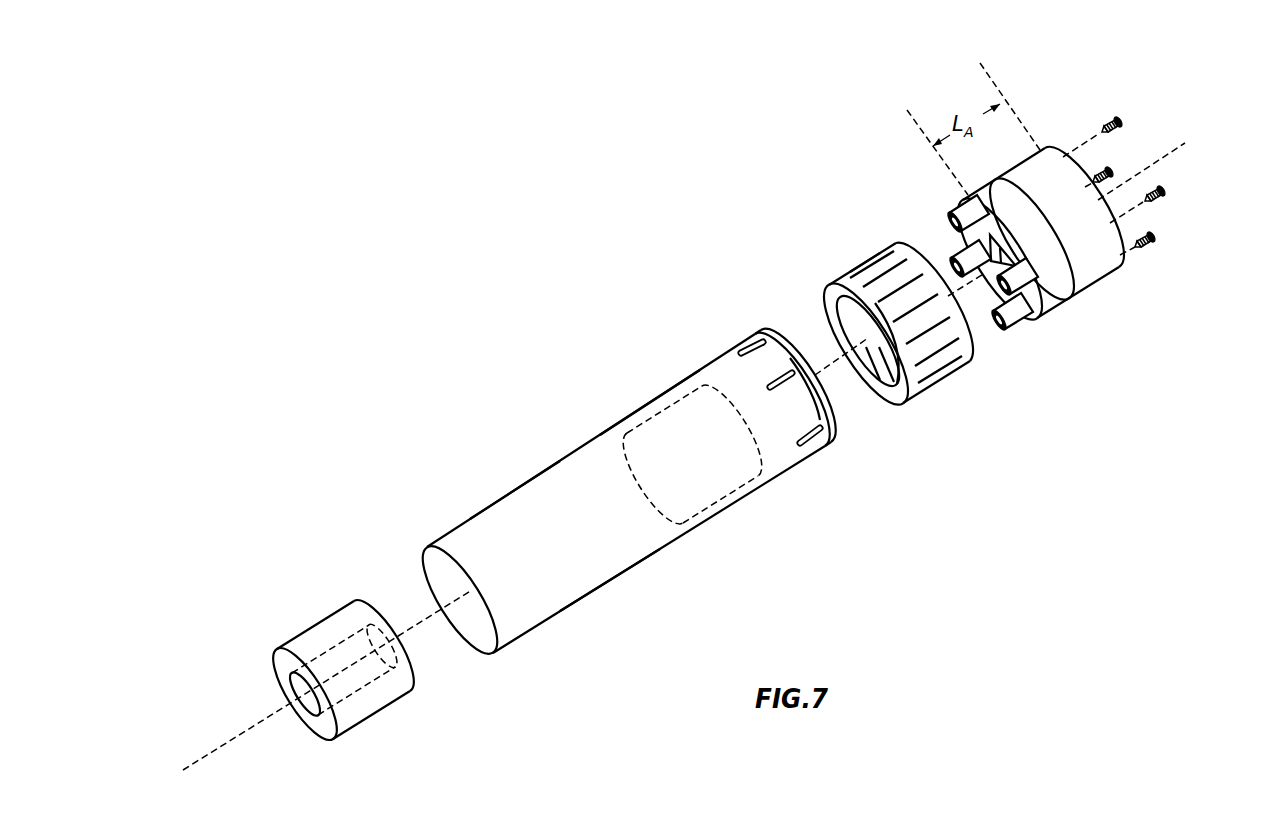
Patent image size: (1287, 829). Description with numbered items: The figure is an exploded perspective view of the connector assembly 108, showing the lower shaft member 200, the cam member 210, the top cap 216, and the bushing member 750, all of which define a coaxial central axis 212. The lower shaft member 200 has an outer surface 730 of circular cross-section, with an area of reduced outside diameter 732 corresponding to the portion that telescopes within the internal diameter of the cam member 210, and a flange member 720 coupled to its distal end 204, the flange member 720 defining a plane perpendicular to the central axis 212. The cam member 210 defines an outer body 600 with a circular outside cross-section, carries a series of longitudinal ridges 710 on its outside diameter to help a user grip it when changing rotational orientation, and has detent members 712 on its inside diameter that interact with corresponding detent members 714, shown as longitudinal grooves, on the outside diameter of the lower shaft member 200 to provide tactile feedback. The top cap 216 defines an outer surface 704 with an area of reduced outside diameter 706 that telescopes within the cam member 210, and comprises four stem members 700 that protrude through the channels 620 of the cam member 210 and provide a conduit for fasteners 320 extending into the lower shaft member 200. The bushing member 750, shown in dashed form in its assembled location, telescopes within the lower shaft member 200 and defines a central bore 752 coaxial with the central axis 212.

The connector assembly 108 is at (610, 330).
The lower shaft member 200 is at (452, 477).
The distal end 204 is at (722, 332).
The cam member 210 is at (852, 236).
The central axis 212 is at (242, 736).
The top cap 216 is at (1048, 130).
The fasteners 320 is at (1164, 195).
The outer body 600 is at (836, 280).
The channels 620 is at (866, 345).
The stem members 700 is at (952, 216).
The outer surface 704 is at (1100, 270).
The area of reduced outside diameter 706 is at (1062, 303).
The longitudinal ridges 710 is at (962, 380).
The detent members 712 is at (890, 386).
The detent members 714 is at (738, 354).
The flange member 720 is at (764, 330).
The outer surface 730 is at (574, 606).
The area of reduced outside diameter 732 is at (758, 372).
The bushing member 750 is at (297, 631).
The central bore 752 is at (307, 712).